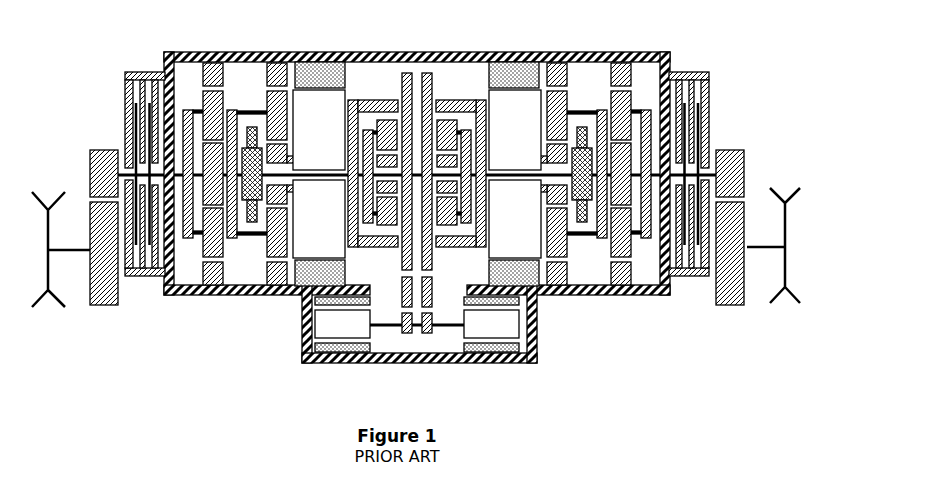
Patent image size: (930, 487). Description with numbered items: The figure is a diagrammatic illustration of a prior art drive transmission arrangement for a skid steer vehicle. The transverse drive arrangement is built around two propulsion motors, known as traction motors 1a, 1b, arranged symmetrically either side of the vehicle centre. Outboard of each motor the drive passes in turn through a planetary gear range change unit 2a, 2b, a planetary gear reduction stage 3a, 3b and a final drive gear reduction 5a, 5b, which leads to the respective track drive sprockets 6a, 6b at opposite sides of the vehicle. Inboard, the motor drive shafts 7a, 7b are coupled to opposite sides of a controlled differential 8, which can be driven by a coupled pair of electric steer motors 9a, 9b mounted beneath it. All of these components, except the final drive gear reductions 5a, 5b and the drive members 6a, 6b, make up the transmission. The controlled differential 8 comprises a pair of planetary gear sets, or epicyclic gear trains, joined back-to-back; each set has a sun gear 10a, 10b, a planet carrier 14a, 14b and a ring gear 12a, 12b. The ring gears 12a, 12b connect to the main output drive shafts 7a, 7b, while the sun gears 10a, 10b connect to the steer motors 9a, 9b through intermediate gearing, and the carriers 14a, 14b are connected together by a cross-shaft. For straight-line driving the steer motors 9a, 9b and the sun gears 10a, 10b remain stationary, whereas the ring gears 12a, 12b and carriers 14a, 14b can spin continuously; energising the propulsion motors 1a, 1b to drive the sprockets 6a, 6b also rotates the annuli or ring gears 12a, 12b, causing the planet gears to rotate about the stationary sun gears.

The traction motor 1a is at (322, 110).
The traction motor 1b is at (512, 115).
The planetary gear range change unit 2a is at (252, 155).
The planetary gear range change unit 2b is at (582, 152).
The planetary gear reduction stage 3a is at (212, 145).
The planetary gear reduction stage 3b is at (622, 170).
The final drive gear reduction 5a is at (105, 167).
The final drive gear reduction 5b is at (732, 172).
The track drive sprocket 6a is at (50, 305).
The track drive sprocket 6b is at (785, 298).
The motor drive shaft 7a is at (300, 173).
The motor drive shaft 7b is at (523, 173).
The controlled differential 8 is at (418, 72).
The electric steer motor 9a is at (340, 327).
The electric steer motor 9b is at (498, 325).
The sun gear 10a is at (407, 258).
The sun gear 10b is at (427, 258).
The ring gear 12a is at (353, 197).
The ring gear 12b is at (477, 198).
The planet carrier 14a is at (368, 168).
The planet carrier 14b is at (467, 167).